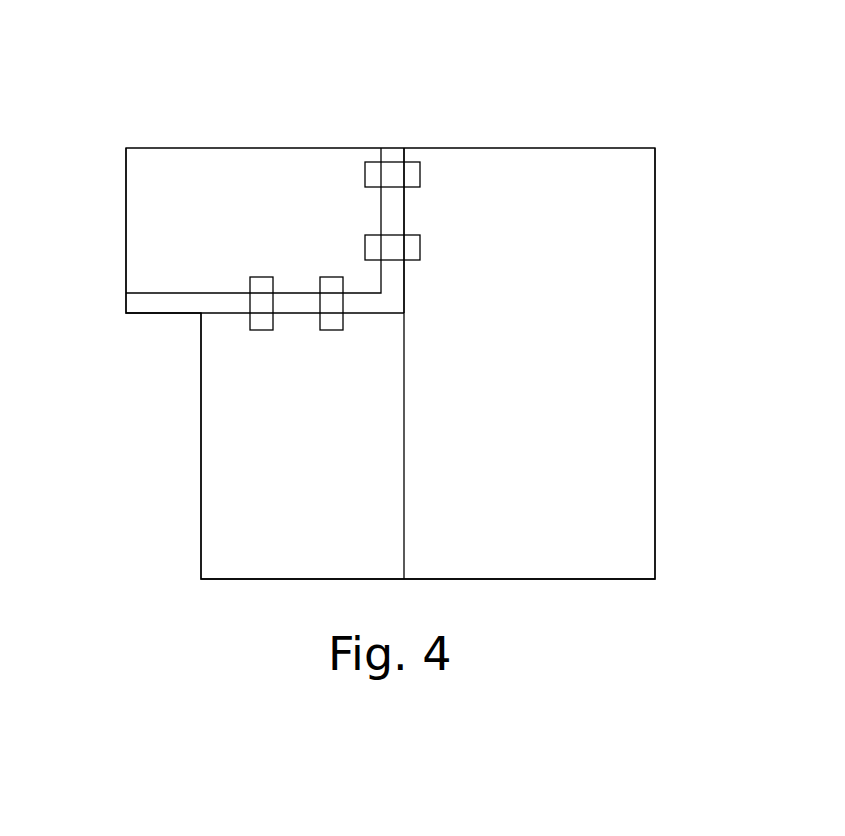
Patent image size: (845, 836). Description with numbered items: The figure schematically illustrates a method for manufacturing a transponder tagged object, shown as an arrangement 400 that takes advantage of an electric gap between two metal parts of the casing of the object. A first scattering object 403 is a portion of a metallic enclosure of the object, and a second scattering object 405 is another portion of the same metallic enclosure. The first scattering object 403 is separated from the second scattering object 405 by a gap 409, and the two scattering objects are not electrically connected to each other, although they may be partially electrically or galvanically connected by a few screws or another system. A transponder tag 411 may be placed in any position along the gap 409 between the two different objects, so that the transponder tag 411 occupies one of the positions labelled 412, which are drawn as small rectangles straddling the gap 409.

The electronic assembly 400 is at (749, 59).
The first scattering object 403 is at (235, 167).
The second scattering object 405 is at (632, 428).
The gap 409 is at (393, 147).
The transponder tag 411 is at (430, 178).
The positions 412 is at (424, 247).